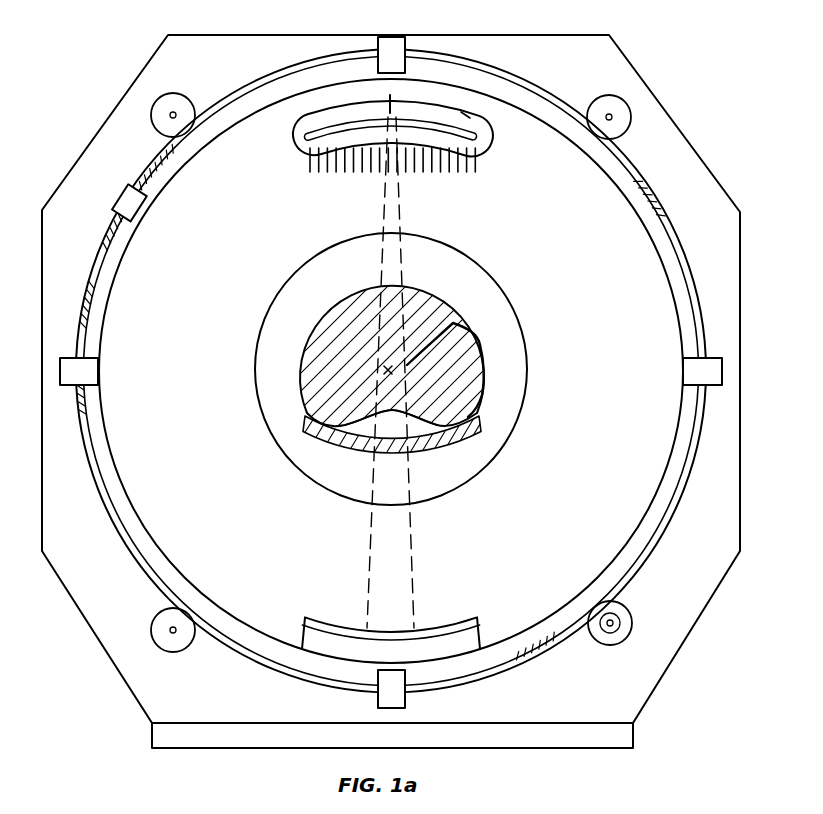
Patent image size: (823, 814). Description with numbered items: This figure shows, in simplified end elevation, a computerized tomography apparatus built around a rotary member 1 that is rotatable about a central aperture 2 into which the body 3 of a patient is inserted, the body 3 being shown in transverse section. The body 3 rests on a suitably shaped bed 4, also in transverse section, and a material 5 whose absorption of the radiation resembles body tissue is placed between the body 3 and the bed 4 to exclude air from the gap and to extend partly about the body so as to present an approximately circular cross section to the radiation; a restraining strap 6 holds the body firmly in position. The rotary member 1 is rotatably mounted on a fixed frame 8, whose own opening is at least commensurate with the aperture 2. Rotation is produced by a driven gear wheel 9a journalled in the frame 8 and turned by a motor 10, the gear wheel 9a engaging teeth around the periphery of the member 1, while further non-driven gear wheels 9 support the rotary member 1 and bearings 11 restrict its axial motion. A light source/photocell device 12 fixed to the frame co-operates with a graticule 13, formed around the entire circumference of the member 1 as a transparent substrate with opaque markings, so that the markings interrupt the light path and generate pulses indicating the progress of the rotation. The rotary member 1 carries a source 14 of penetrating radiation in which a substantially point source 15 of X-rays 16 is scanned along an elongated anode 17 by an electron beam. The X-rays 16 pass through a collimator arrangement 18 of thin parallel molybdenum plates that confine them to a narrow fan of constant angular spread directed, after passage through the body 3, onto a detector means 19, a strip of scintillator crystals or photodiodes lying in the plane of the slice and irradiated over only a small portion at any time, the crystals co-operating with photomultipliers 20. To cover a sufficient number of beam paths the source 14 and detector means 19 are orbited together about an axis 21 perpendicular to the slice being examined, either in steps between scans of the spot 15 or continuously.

The rotary member 1 is at (626, 517).
The aperture 2 is at (307, 258).
The body 3 is at (358, 368).
The bed 4 is at (427, 437).
The material 5 is at (384, 440).
The restraining strap 6 is at (483, 375).
The fixed frame 8 is at (719, 330).
The gear wheels 9 is at (180, 95).
The gear wheel 9a is at (628, 607).
The motor 10 is at (611, 630).
The bearings 11 is at (392, 43).
The light source/photocell device 12 is at (115, 193).
The graticule 13 is at (87, 318).
The source of penetrating radiation 14 is at (300, 108).
The point source 15 is at (388, 98).
The X-rays 16 is at (413, 208).
The elongated anode 17 is at (461, 112).
The collimator arrangement 18 is at (478, 162).
The detector means 19 is at (479, 617).
The photomultipliers 20 is at (305, 634).
The axis 21 is at (453, 324).